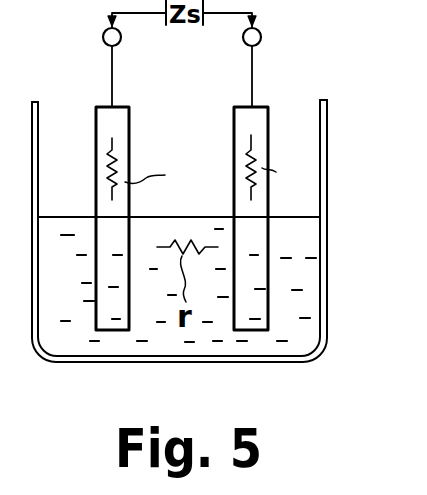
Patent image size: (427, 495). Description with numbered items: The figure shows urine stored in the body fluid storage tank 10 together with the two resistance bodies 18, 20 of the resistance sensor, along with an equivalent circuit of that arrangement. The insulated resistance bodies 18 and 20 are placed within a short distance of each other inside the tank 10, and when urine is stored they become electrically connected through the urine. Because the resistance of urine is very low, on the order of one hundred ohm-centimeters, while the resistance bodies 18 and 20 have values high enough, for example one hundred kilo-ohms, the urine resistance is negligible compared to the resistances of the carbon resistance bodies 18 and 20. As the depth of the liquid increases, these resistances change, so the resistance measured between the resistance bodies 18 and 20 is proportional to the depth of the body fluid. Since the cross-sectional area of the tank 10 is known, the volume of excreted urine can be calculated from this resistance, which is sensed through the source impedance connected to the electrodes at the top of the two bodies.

The body fluid storage tank 10 is at (327, 151).
The resistance body 18 is at (96, 108).
The resistance body 20 is at (270, 122).